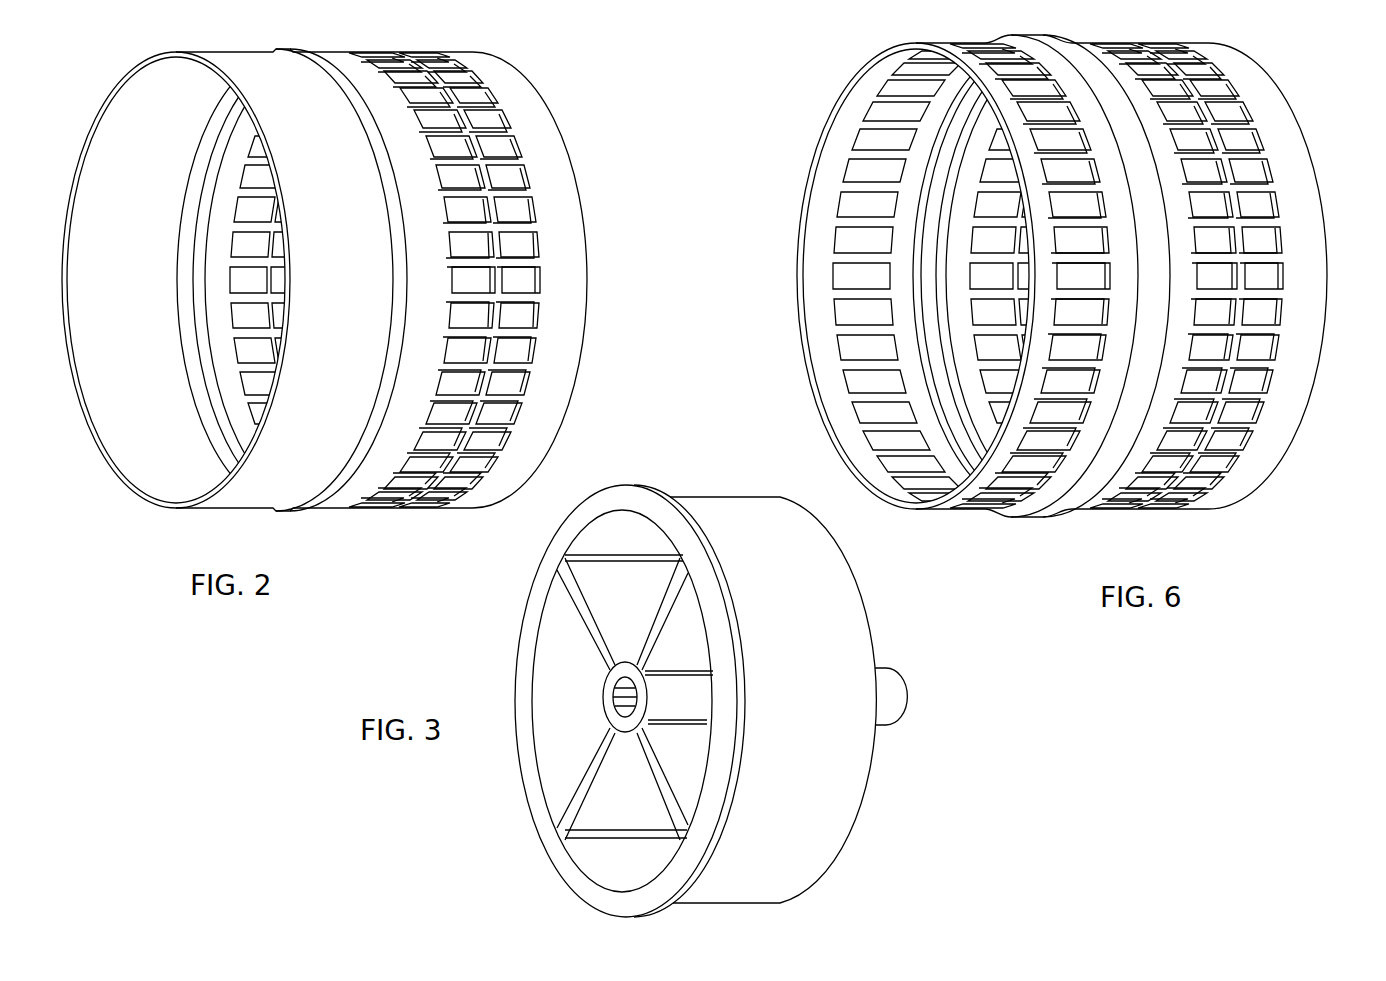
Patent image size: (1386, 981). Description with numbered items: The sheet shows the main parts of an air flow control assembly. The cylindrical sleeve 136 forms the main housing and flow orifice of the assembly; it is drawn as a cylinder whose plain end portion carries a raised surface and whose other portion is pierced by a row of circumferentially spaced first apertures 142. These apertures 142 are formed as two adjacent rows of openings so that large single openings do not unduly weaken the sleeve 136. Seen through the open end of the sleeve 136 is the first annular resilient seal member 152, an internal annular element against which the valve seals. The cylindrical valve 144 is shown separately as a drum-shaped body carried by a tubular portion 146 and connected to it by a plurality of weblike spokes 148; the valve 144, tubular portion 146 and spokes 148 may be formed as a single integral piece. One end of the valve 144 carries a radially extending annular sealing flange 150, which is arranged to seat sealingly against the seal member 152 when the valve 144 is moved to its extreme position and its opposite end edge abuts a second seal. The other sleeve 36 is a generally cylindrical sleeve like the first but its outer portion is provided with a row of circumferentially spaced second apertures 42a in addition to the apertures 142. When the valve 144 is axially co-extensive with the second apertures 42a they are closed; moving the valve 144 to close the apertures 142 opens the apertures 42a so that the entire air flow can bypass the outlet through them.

In FIG. 2, the cylindrical sleeve 136 is at (362, 212).
In FIG. 2, the first apertures 142 is at (512, 147).
In FIG. 6, the first apertures 142 is at (1255, 173).
In FIG. 2, the first annular resilient seal member 152 is at (200, 290).
In FIG. 6, the first annular resilient seal member 152 is at (930, 358).
In FIG. 6, the cylindrical sleeve 36 is at (972, 488).
In FIG. 6, the second apertures 42a is at (853, 352).
In FIG. 3, the cylindrical valve 144 is at (836, 627).
In FIG. 3, the tubular portion 146 is at (895, 704).
In FIG. 3, the weblike spokes 148 is at (592, 803).
In FIG. 3, the annular sealing flange 150 is at (727, 804).